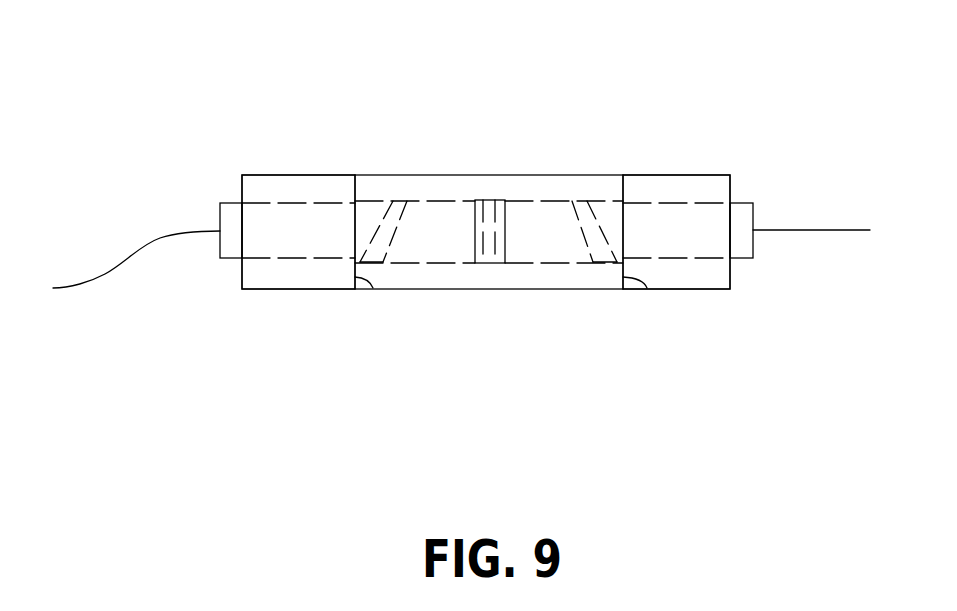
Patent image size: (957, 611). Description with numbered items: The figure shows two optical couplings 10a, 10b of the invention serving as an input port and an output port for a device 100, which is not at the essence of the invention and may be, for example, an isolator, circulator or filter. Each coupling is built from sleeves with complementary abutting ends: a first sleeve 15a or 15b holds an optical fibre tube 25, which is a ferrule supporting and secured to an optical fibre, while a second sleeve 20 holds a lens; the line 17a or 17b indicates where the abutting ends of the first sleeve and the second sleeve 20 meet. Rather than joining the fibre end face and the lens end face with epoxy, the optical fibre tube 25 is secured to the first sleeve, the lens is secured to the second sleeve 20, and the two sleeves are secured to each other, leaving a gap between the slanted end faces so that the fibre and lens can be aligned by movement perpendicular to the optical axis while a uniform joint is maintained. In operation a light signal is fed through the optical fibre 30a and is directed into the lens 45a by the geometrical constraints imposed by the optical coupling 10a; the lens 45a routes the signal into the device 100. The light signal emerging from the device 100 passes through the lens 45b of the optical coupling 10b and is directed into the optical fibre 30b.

The device 100 is at (488, 174).
The optical coupling 10a is at (315, 175).
The optical coupling 10b is at (622, 174).
The first sleeve 15a is at (313, 288).
The first sleeve 15b is at (713, 290).
The line of abutting ends 17a is at (377, 290).
The line of abutting ends 17b is at (647, 290).
The second sleeve 20 is at (492, 273).
The optical fibre tube 25 is at (233, 203).
The optical fibre 30a is at (162, 238).
The optical fibre 30b is at (810, 232).
The lens 45a is at (438, 248).
The lens 45b is at (562, 245).